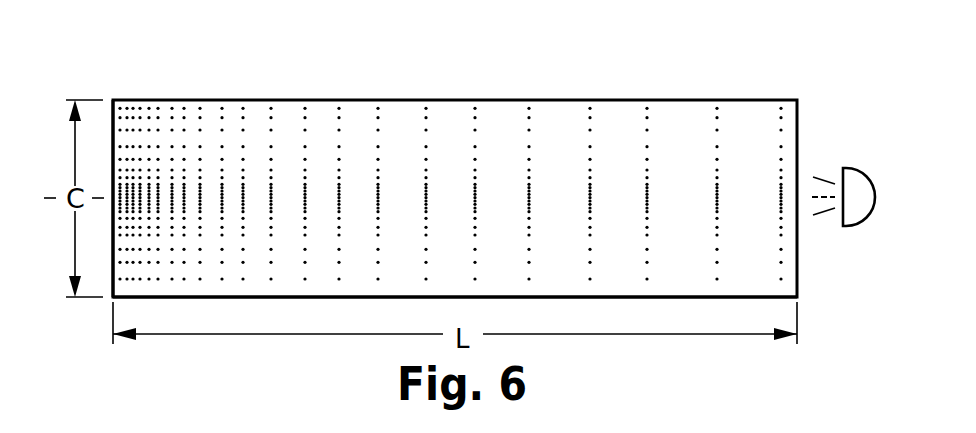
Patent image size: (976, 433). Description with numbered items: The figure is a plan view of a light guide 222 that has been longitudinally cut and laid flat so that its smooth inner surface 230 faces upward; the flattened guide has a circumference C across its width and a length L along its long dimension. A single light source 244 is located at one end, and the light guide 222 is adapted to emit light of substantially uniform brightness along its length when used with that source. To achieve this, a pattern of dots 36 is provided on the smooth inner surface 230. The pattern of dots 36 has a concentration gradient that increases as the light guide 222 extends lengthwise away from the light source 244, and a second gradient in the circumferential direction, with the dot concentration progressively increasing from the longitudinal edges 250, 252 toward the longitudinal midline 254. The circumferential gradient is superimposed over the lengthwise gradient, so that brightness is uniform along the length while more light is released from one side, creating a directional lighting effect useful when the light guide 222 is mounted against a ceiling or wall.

The light guide 222 is at (567, 52).
The smooth inner surface 230 is at (392, 110).
The longitudinal edge 250 is at (425, 108).
The pattern of dots 36 is at (305, 108).
The light source 244 is at (853, 168).
The longitudinal edge 252 is at (634, 298).
The longitudinal midline 254 is at (34, 198).